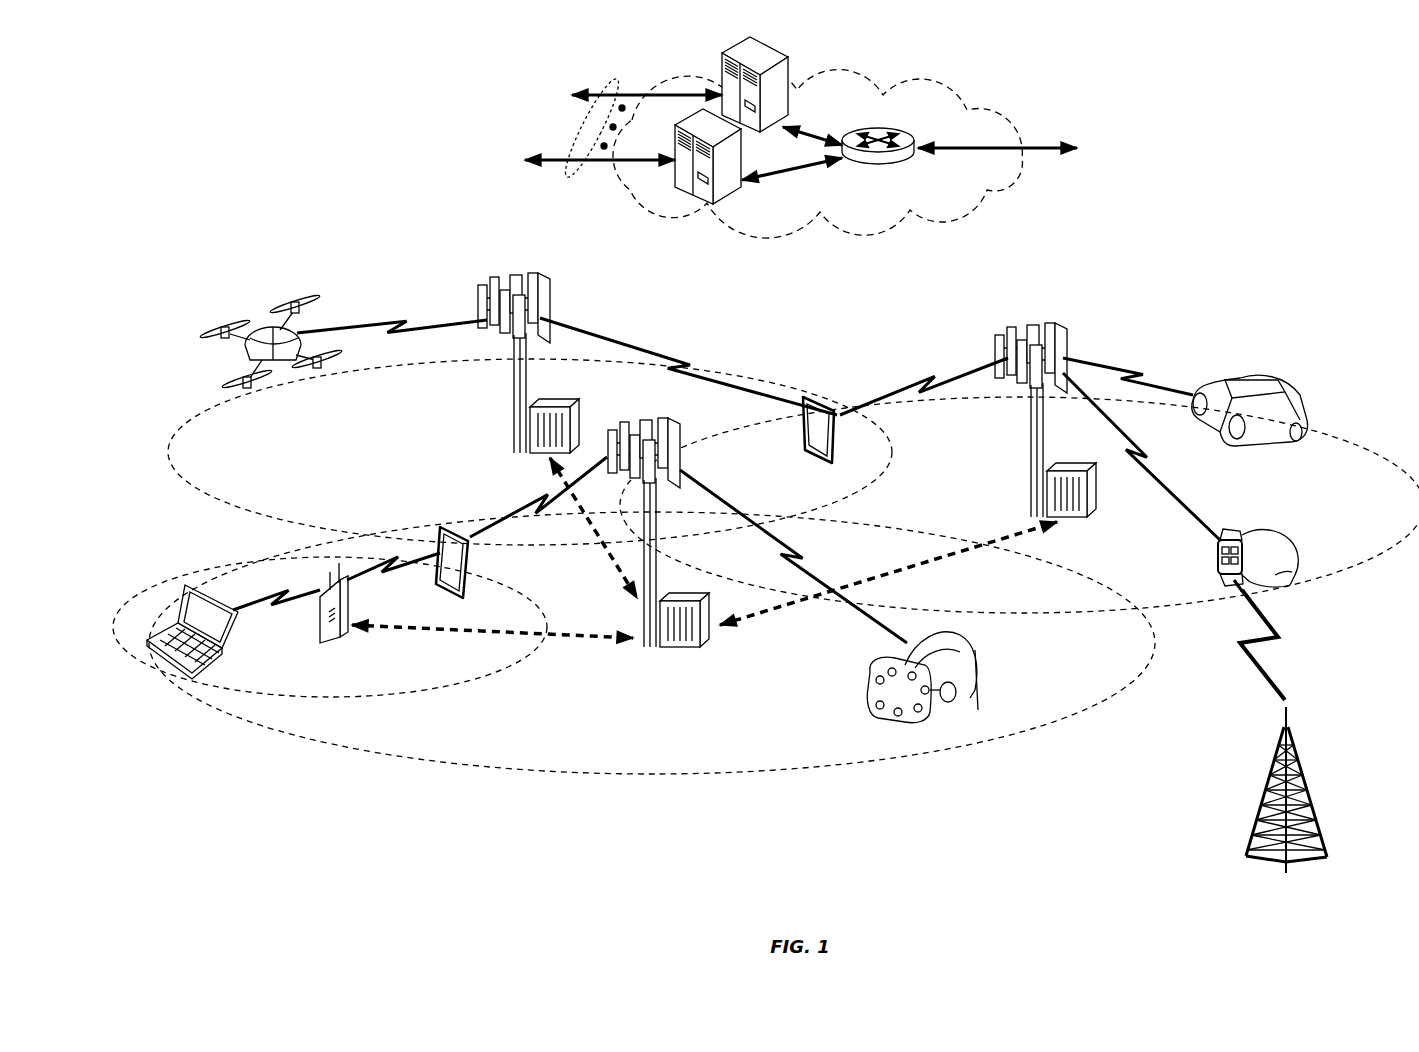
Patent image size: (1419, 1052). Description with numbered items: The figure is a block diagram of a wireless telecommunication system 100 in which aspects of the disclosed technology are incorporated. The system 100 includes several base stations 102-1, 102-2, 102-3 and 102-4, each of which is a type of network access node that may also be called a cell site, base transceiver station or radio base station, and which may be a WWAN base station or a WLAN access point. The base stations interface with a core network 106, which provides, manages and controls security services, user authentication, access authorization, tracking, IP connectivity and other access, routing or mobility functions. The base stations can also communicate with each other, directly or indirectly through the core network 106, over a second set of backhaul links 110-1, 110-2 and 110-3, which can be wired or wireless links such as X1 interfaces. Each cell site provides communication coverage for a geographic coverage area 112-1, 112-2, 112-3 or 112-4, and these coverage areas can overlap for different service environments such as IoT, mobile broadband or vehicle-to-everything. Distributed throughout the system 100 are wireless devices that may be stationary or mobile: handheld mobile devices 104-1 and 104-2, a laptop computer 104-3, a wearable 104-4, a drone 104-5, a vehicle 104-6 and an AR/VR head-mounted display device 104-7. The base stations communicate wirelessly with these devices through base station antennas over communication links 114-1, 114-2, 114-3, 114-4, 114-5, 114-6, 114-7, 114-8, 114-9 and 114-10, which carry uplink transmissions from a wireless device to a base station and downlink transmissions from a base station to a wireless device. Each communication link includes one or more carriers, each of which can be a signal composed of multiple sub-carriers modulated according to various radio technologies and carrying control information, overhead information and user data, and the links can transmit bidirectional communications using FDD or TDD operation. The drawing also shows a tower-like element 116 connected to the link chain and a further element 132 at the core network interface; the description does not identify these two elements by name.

The wireless telecommunication system 100 is at (1322, 138).
The base station 102-1 is at (647, 650).
The base station 102-2 is at (510, 403).
The base station 102-3 is at (1028, 433).
The base station 102-4 is at (320, 635).
The wireless device 104-1 is at (470, 573).
The wireless device 104-2 is at (803, 433).
The wireless device 104-3 is at (172, 667).
The wireless device 104-4 is at (1233, 537).
The wireless device 104-5 is at (280, 367).
The wireless device 104-6 is at (1267, 388).
The wireless device 104-7 is at (983, 660).
The core network 106 is at (907, 213).
The backhaul link 110-1 is at (390, 630).
The backhaul link 110-2 is at (953, 557).
The backhaul link 110-3 is at (608, 555).
The geographic coverage area 112-1 is at (580, 777).
The geographic coverage area 112-2 is at (453, 690).
The geographic coverage area 112-3 is at (230, 505).
The geographic coverage area 112-4 is at (1330, 435).
The communication link 114-1 is at (803, 557).
The communication link 114-2 is at (537, 505).
The communication link 114-3 is at (245, 610).
The communication link 114-4 is at (390, 575).
The communication link 114-5 is at (397, 315).
The communication link 114-6 is at (680, 353).
The communication link 114-7 is at (920, 377).
The communication link 114-8 is at (1157, 483).
The communication link 114-9 is at (1123, 363).
The communication link 114-10 is at (1272, 648).
The broadcast tower 116 is at (1297, 772).
The network interface 132 is at (582, 172).